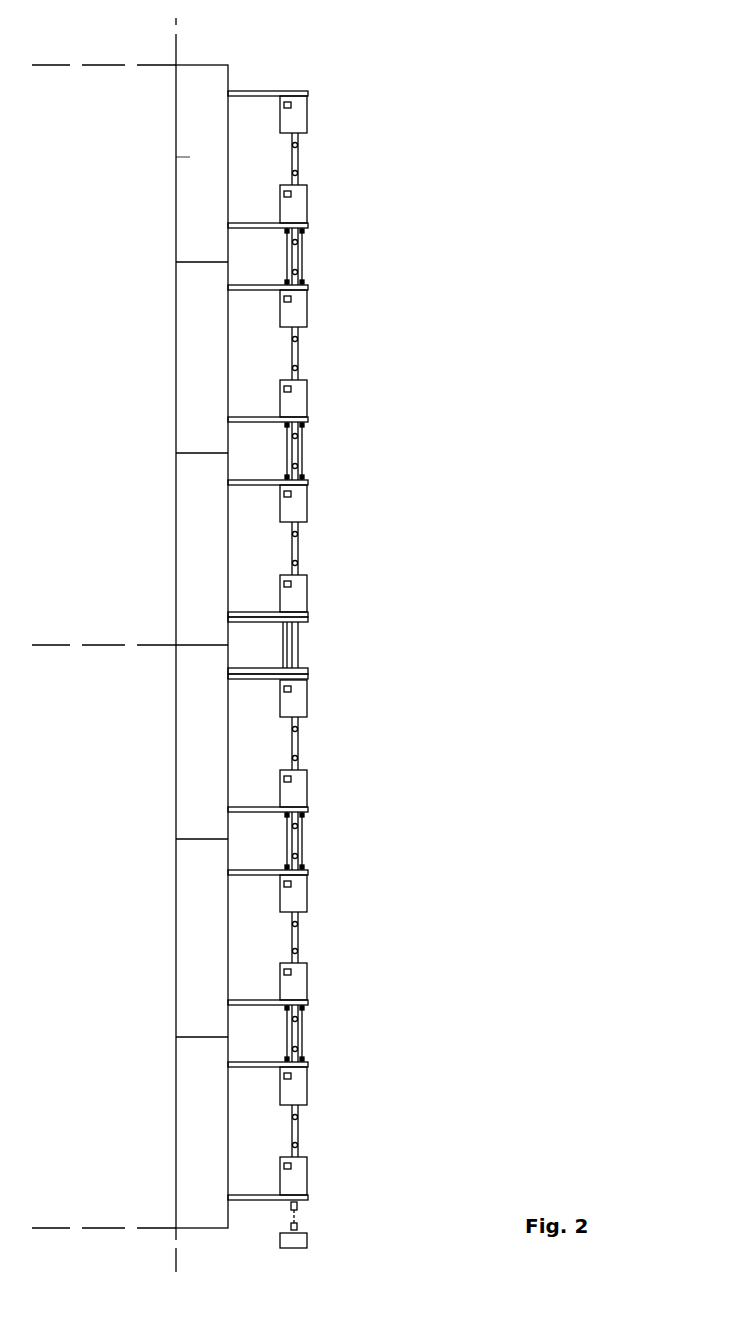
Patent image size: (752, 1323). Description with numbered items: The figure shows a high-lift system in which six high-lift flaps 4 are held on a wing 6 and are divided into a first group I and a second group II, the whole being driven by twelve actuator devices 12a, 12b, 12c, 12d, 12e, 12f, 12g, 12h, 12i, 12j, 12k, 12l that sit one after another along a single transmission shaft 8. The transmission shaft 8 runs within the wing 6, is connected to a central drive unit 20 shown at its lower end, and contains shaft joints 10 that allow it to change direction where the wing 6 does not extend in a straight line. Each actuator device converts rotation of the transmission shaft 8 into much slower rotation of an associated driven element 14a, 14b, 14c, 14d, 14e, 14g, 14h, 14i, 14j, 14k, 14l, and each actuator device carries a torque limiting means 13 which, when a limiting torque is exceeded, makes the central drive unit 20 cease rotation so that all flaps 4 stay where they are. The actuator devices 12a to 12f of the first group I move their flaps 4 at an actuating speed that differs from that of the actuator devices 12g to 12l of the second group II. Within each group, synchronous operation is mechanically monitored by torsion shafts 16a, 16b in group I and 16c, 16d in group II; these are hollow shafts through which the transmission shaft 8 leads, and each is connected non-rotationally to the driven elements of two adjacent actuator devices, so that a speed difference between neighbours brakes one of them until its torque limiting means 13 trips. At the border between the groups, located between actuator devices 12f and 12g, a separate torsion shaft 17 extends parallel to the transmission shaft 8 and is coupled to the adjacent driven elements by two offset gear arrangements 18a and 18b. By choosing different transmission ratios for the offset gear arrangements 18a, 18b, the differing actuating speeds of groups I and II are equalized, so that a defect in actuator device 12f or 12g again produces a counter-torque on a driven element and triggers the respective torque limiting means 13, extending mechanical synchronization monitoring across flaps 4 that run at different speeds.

The high-lift flaps 4 is at (188, 160).
The wing 6 is at (205, 46).
The transmission shaft 8 is at (299, 548).
The shaft joints 10 is at (299, 171).
The actuator device 12a is at (306, 1170).
The actuator device 12b is at (306, 1090).
The actuator device 12c is at (306, 980).
The actuator device 12d is at (306, 904).
The actuator device 12e is at (306, 784).
The actuator device 12f is at (306, 702).
The actuator device 12g is at (306, 586).
The actuator device 12h is at (306, 502).
The actuator device 12i is at (306, 388).
The actuator device 12j is at (306, 312).
The actuator device 12k is at (306, 196).
The actuator device 12l is at (306, 116).
The torque limiting means 13 is at (283, 105).
The driven element 14a is at (309, 1200).
The driven element 14b is at (309, 1065).
The driven element 14c is at (309, 1003).
The driven element 14d is at (309, 872).
The driven element 14e is at (309, 677).
The driven element 14g is at (309, 614).
The driven element 14h is at (309, 485).
The driven element 14i is at (309, 422).
The driven element 14j is at (309, 288).
The driven element 14k is at (309, 226).
The driven element 14l is at (309, 93).
The torsion shaft 16a is at (303, 1045).
The torsion shaft 16b is at (303, 848).
The torsion shaft 16c is at (303, 455).
The torsion shaft 16d is at (303, 252).
The torsion shaft 17 is at (282, 652).
The offset gear arrangement 18a is at (309, 670).
The offset gear arrangement 18b is at (309, 621).
The central drive unit 20 is at (307, 1240).
The first group I is at (62, 925).
The second group II is at (68, 345).